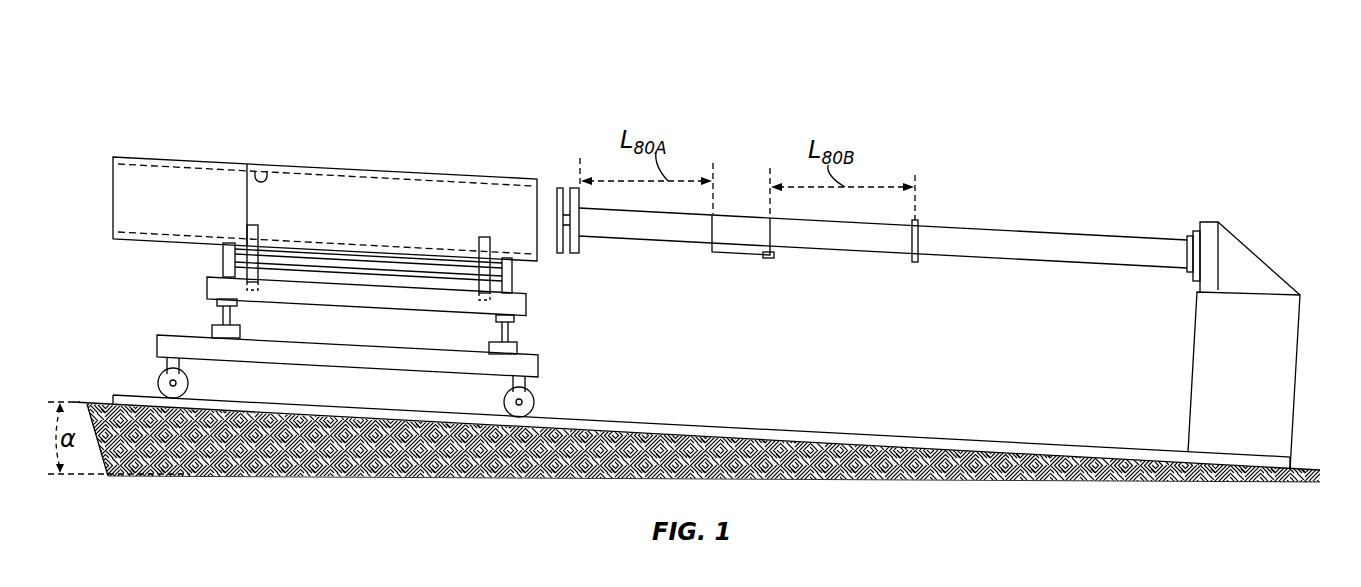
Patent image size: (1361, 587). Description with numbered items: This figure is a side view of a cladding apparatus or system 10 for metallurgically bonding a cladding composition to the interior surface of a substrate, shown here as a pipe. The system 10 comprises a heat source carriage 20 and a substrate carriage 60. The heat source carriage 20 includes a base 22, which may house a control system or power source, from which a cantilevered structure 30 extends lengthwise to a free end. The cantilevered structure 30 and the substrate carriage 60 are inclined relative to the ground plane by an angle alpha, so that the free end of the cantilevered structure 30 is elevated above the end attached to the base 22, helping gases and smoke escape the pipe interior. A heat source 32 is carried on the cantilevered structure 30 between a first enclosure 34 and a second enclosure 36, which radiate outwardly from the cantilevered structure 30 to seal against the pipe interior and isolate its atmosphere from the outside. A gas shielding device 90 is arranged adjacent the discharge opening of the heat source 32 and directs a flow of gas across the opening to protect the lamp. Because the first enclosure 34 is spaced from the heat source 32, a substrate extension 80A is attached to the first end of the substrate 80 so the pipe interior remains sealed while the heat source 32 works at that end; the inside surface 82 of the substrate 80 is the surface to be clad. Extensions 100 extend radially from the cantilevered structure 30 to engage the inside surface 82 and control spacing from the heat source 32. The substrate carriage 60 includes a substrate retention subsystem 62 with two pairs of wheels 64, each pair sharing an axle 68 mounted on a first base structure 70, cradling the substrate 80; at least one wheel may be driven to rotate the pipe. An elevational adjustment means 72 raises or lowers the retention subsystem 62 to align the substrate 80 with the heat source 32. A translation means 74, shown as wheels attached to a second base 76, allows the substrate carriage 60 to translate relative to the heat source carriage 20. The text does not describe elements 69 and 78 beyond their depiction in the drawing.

The apparatus or system 10 is at (1278, 147).
The heat source carriage 20 is at (1250, 218).
The base 22 is at (1193, 370).
The cantilevered structure 30 is at (842, 260).
The heat source 32 is at (730, 258).
The first enclosure 34 is at (580, 242).
The second enclosure 36 is at (916, 264).
The substrate carriage 60 is at (138, 333).
The substrate retention subsystem 62 is at (550, 284).
The wheels 64 is at (257, 226).
The axle 68 is at (338, 276).
The clamp 69 is at (222, 258).
The first base structure 70 is at (207, 288).
The elevational adjustment means 72 is at (232, 312).
The translation means 74 is at (189, 380).
The second base 76 is at (565, 375).
The track 78 is at (890, 430).
The substrate 80 is at (396, 166).
The substrate extension 80A is at (182, 157).
The inside surface 82 is at (262, 172).
The gas shielding device 90 is at (770, 260).
The extensions 100 is at (556, 190).